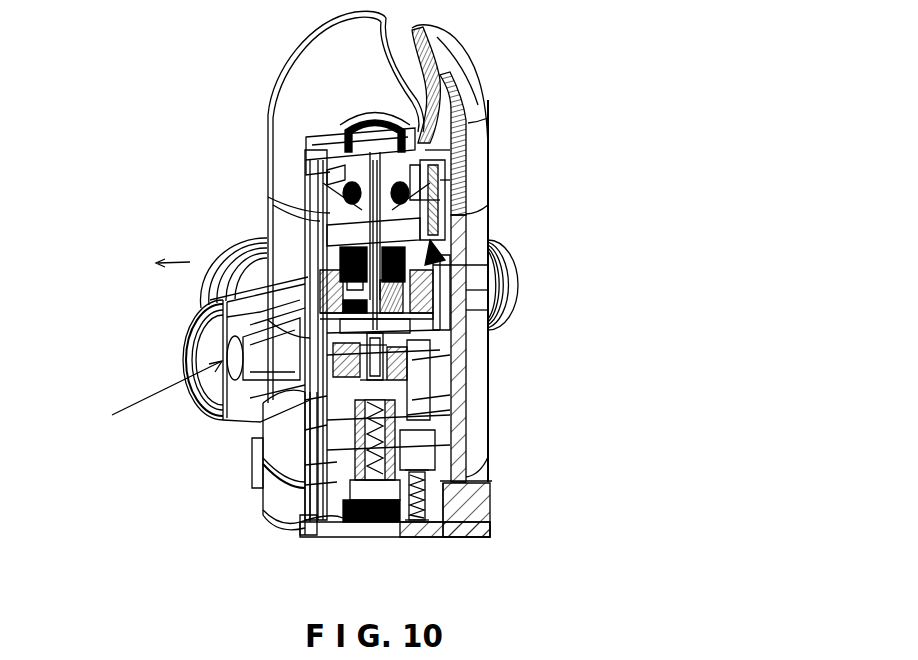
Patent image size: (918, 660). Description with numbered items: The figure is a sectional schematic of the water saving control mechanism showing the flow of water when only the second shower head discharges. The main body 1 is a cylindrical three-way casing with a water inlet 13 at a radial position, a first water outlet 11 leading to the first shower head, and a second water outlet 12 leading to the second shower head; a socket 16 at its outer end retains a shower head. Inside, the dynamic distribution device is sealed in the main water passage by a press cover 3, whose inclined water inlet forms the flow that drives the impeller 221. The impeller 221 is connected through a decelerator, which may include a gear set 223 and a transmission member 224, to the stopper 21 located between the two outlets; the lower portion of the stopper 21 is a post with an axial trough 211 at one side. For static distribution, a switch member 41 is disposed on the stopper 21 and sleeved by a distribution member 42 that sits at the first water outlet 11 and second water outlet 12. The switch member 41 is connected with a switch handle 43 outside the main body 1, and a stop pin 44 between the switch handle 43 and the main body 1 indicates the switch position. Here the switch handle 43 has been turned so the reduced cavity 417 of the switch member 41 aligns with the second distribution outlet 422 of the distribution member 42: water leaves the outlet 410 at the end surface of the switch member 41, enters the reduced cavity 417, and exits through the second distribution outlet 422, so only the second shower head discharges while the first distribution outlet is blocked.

The main body 1 is at (478, 212).
The press cover 3 is at (322, 205).
The first water outlet 11 is at (514, 266).
The second water outlet 12 is at (238, 240).
The water inlet 13 is at (215, 345).
The socket 16 is at (468, 77).
The stopper 21 is at (514, 308).
The switch member 41 is at (300, 472).
The distribution member 42 is at (480, 381).
The switch handle 43 is at (275, 506).
The stop pin 44 is at (412, 518).
The axial trough 211 is at (307, 400).
The impeller 221 is at (330, 226).
The gear set 223 is at (516, 284).
The transmission member 224 is at (478, 238).
The outlet 410 is at (484, 336).
The reduced cavity 417 is at (410, 368).
The second distribution outlet 422 is at (420, 396).